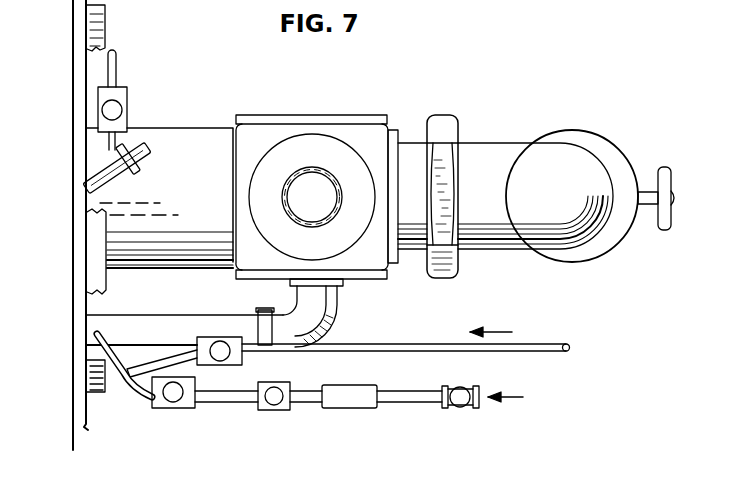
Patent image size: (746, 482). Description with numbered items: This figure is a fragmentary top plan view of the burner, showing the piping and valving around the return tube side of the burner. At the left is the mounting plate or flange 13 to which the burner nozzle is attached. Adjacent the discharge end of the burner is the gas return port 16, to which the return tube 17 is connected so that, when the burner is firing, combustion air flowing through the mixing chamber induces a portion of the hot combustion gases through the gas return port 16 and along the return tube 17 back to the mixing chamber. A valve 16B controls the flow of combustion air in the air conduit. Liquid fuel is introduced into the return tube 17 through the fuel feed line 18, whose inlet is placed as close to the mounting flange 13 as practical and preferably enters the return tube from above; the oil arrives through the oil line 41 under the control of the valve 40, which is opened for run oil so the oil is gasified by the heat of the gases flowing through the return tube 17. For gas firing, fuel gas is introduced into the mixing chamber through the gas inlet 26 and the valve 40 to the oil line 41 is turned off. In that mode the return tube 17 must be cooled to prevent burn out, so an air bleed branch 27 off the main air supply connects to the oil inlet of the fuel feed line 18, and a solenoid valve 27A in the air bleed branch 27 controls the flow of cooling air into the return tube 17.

The mounting plate or flange 13 is at (86, 365).
The gas return port 16 is at (503, 157).
The valve 16B is at (647, 192).
The return tube 17 is at (140, 328).
The fuel feed line 18 is at (102, 352).
The gas inlet 26 is at (312, 168).
The air bleed branch 27 is at (353, 347).
The solenoid valve 27A is at (238, 364).
The valve 40 is at (189, 406).
The oil line 41 is at (423, 402).